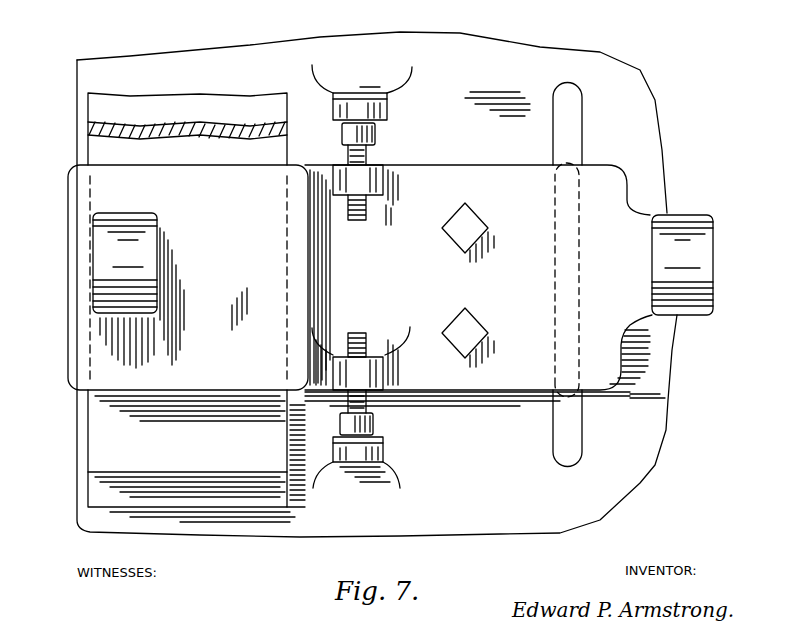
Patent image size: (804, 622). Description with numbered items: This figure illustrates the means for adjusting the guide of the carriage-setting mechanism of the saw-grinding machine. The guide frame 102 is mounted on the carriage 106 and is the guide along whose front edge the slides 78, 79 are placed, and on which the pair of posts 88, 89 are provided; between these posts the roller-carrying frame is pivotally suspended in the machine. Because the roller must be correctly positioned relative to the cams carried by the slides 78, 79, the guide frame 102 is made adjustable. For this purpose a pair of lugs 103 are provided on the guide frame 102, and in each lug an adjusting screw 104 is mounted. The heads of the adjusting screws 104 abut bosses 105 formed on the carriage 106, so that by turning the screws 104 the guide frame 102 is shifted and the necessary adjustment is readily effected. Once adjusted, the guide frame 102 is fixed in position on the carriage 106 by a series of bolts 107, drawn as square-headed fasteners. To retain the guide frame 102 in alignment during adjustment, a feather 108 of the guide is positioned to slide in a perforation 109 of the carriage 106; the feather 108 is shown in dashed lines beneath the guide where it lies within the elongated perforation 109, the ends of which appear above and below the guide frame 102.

The slide 78 is at (196, 307).
The slide 79 is at (297, 505).
The post 88 is at (128, 222).
The post 89 is at (712, 245).
The guide frame 102 is at (485, 249).
The lug 103 is at (380, 370).
The adjusting screw 104 is at (373, 420).
The boss 105 is at (385, 450).
The carriage 106 is at (377, 284).
The bolt 107 is at (462, 318).
The feather 108 is at (555, 300).
The perforation 109 is at (575, 127).